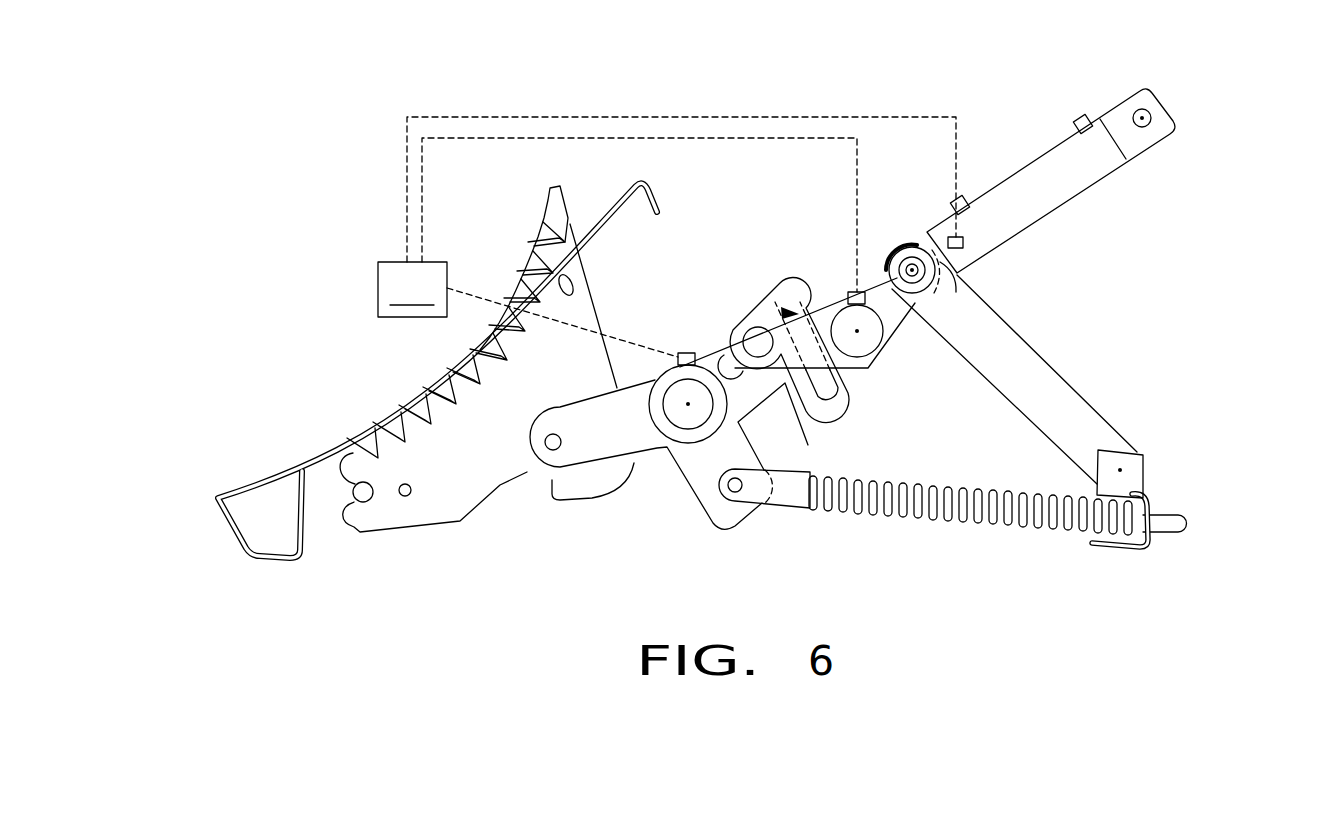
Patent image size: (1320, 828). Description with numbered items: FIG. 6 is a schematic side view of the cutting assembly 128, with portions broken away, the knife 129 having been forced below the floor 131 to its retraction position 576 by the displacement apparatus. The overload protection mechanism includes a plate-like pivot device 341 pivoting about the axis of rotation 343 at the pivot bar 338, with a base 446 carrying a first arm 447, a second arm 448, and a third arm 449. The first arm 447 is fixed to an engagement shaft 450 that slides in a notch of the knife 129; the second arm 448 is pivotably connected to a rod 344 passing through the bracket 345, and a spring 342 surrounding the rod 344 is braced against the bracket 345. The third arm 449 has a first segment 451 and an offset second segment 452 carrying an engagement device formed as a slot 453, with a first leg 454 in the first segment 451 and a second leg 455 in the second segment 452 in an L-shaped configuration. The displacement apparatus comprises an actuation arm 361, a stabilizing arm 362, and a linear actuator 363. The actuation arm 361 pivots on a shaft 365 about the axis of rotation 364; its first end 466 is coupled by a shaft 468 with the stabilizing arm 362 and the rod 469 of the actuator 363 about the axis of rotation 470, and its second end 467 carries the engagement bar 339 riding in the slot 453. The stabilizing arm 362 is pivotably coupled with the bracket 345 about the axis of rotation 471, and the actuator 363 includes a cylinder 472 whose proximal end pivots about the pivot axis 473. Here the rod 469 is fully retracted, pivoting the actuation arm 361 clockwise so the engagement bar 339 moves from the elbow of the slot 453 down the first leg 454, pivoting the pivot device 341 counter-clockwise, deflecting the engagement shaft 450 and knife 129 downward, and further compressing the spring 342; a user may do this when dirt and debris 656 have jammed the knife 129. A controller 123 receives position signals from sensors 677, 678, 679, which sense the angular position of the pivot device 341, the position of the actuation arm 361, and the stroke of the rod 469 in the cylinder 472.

The cutting assembly 128 is at (280, 340).
The knife 129 is at (533, 256).
The floor 131 is at (284, 470).
The controller 123 is at (667, 237).
The retraction position 576 is at (580, 211).
The dirt and debris 656 is at (568, 288).
The actuation arm 361 is at (752, 229).
The first segment 451 is at (757, 298).
The engagement device 453 is at (785, 284).
The second end 467 is at (748, 300).
The sensor 677 is at (677, 355).
The sensor 678 is at (853, 292).
The sensor 679 is at (964, 240).
The first end 466 is at (857, 230).
The axis of rotation 470 is at (888, 250).
The rod 469 is at (957, 278).
The shaft 468 is at (950, 300).
The shaft 365 is at (883, 338).
The axis of rotation 364 is at (859, 333).
The second leg 455 is at (827, 392).
The second segment 452 is at (838, 408).
The first leg 454 is at (748, 368).
The engagement bar 339 is at (757, 342).
The axis of rotation 343 is at (657, 381).
The pivot bar 338 is at (696, 418).
The engagement shaft 450 is at (547, 441).
The first arm 447 is at (592, 480).
The base 446 is at (658, 448).
The second arm 448 is at (732, 530).
The third arm 449 is at (760, 420).
The pivot device 341 is at (767, 534).
The spring 342 is at (973, 517).
The rod 344 is at (1166, 523).
The bracket 345 is at (1143, 494).
The axis of rotation 471 is at (1120, 469).
The stabilizing arm 362 is at (1078, 393).
The actuator 363 is at (1026, 152).
The cylinder 472 is at (1100, 176).
The pivot axis 473 is at (1150, 113).